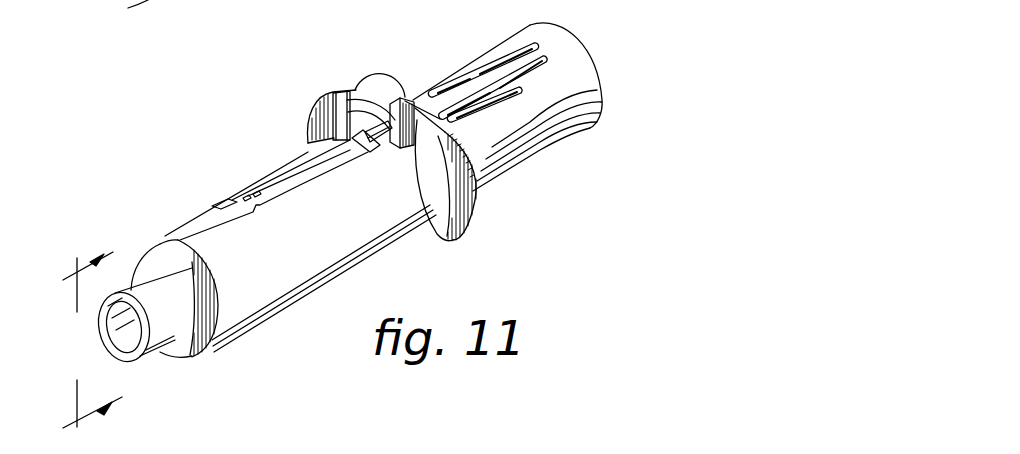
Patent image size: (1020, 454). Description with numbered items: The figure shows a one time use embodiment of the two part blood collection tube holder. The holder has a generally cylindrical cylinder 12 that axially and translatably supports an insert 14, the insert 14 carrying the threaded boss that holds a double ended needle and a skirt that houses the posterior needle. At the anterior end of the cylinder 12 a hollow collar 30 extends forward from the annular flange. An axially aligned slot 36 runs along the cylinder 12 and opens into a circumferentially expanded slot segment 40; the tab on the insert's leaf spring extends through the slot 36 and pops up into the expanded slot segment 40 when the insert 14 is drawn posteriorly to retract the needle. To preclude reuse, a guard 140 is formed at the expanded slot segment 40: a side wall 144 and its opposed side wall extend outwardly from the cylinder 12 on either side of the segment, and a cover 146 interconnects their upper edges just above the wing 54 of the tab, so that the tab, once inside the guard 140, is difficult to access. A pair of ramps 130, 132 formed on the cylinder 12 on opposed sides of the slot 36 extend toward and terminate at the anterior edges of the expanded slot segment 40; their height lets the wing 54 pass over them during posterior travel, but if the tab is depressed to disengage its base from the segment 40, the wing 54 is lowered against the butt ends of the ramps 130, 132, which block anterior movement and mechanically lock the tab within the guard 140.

The cylinder 12 is at (293, 347).
The insert 14 is at (517, 157).
The hollow collar 30 is at (162, 352).
The slot 36 is at (268, 178).
The second circumferentially expanded slot segment 40 is at (380, 145).
The wing 54 is at (367, 100).
The ramp 130 is at (355, 152).
The ramp 132 is at (328, 133).
The guard 140 is at (394, 88).
The side wall 144 is at (455, 120).
The cover 146 is at (372, 96).